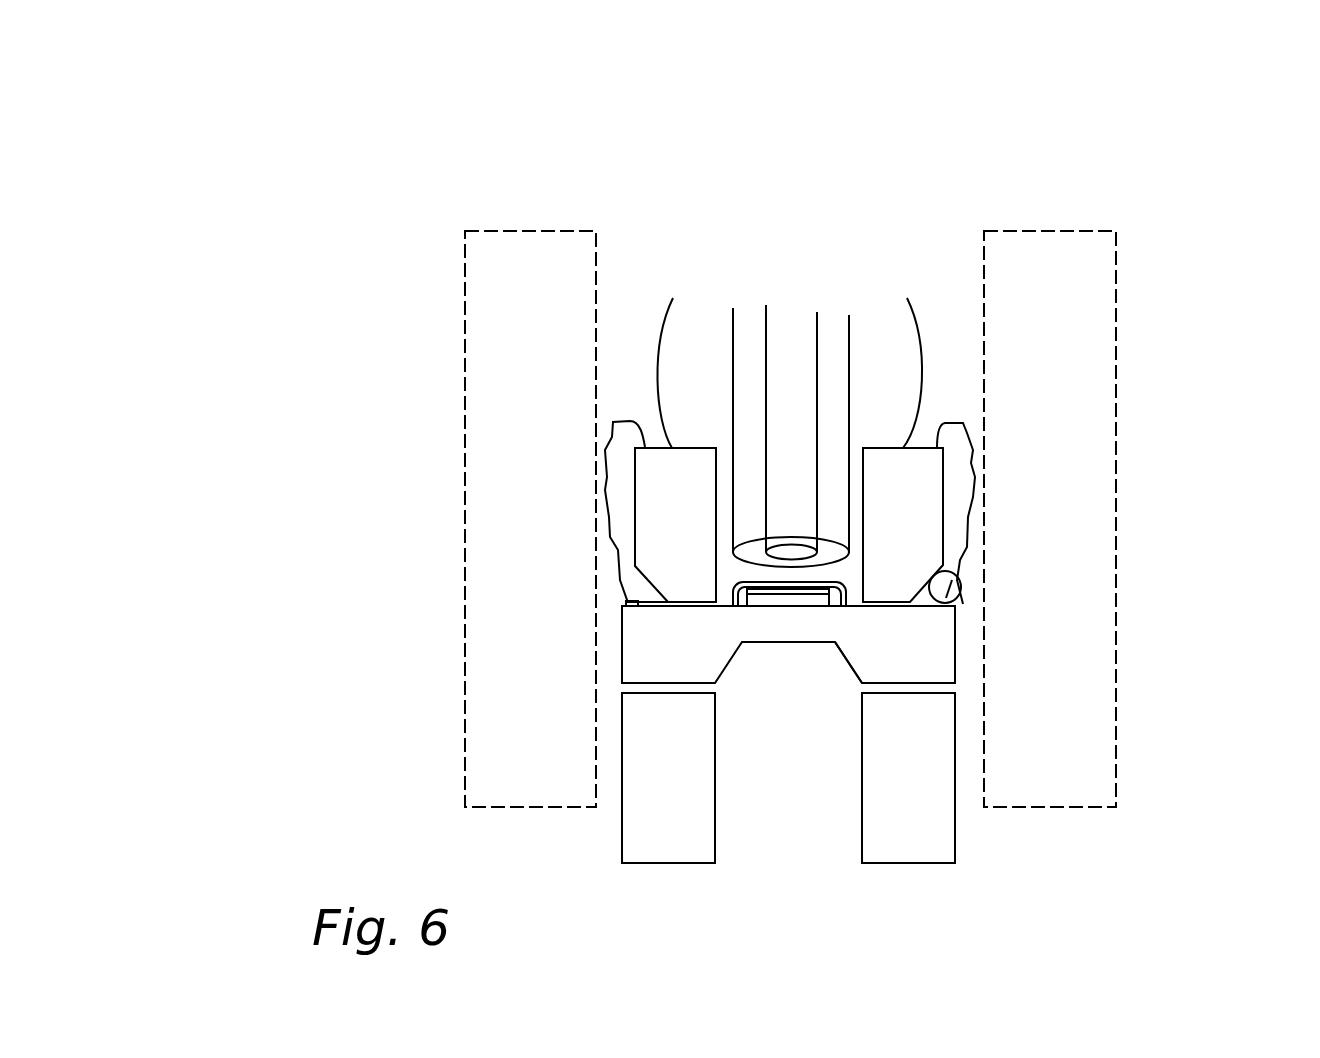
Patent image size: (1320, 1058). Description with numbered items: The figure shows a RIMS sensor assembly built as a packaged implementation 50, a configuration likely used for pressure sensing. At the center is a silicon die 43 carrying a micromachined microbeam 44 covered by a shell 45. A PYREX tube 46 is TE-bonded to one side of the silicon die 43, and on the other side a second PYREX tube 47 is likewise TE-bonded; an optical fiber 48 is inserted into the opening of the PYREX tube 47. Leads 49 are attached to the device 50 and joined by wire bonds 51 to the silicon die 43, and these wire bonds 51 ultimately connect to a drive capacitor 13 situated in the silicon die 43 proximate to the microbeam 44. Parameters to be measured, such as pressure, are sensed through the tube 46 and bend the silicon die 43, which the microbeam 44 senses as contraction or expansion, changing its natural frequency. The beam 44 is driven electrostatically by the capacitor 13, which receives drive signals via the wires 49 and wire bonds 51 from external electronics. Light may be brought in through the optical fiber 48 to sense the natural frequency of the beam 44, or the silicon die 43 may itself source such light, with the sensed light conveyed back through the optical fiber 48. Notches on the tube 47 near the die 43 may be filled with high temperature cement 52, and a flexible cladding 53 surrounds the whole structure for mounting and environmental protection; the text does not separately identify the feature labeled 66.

The packaged implementation 50 is at (1162, 130).
The flexible cladding 53 is at (518, 810).
The wire bonds 51 is at (610, 525).
The PYREX tube 47 is at (660, 453).
The leads 49 is at (666, 320).
The optical fiber 48 is at (830, 325).
The shell 45 is at (832, 585).
The microbeam 44 is at (843, 605).
The high temperature cement 52 is at (962, 598).
The silicon die 43 is at (940, 655).
The drive capacitor 13 is at (788, 607).
The sloped wall 66 is at (837, 647).
The PYREX tube 46 is at (657, 850).